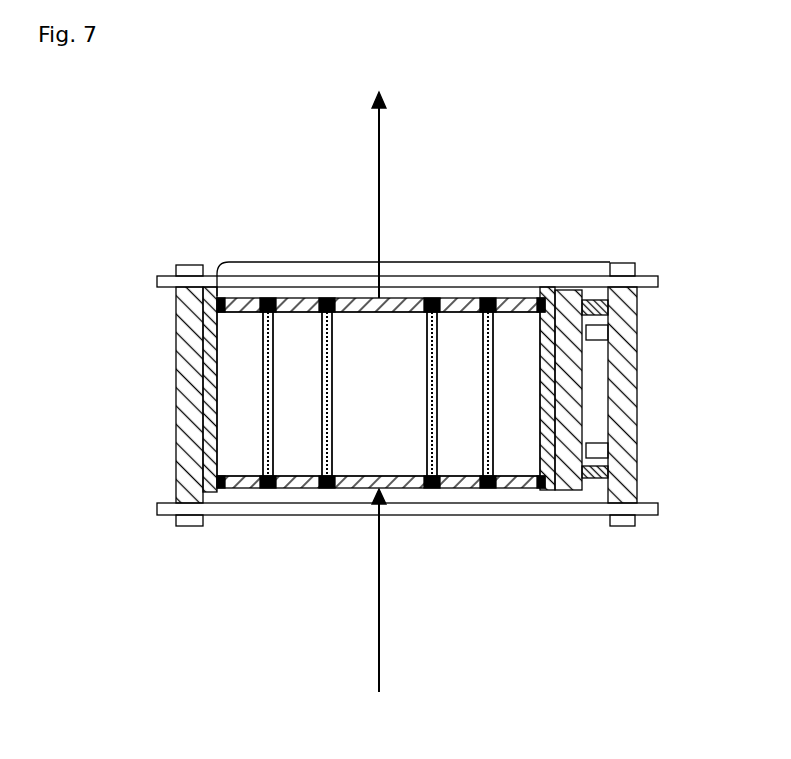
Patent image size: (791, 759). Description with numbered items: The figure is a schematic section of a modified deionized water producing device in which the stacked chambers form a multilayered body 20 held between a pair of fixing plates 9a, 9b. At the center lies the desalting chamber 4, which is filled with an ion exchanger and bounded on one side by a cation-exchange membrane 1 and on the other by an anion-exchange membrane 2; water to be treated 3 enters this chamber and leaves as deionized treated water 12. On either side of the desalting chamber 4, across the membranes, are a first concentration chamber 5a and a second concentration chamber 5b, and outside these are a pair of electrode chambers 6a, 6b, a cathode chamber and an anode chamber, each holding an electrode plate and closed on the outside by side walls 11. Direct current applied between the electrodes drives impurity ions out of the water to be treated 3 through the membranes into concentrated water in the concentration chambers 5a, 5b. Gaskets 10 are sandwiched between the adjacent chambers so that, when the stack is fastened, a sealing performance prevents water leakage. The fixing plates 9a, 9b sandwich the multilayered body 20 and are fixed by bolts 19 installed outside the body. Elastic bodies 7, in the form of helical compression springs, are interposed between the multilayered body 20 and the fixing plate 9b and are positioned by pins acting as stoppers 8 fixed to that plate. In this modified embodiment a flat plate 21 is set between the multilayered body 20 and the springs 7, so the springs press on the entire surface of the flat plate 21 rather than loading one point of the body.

The cation-exchange membrane 1 is at (328, 298).
The anion-exchange membrane 2 is at (268, 298).
The water to be treated 3 is at (383, 662).
The desalting chamber 4 is at (379, 394).
The first concentration chamber 5a is at (297, 394).
The second concentration chamber 5b is at (460, 394).
The electrode chamber 6a is at (240, 394).
The electrode chamber 6b is at (516, 394).
The elastic body 7 is at (610, 457).
The stopper 8 is at (600, 443).
The fixing plate 9a is at (178, 265).
The fixing plate 9b is at (633, 264).
The gasket 10 is at (332, 489).
The side wall 11 is at (216, 284).
The treated water 12 is at (382, 138).
The bolt 19 is at (660, 277).
The multilayered body 20 is at (418, 262).
The flat plate 21 is at (568, 303).